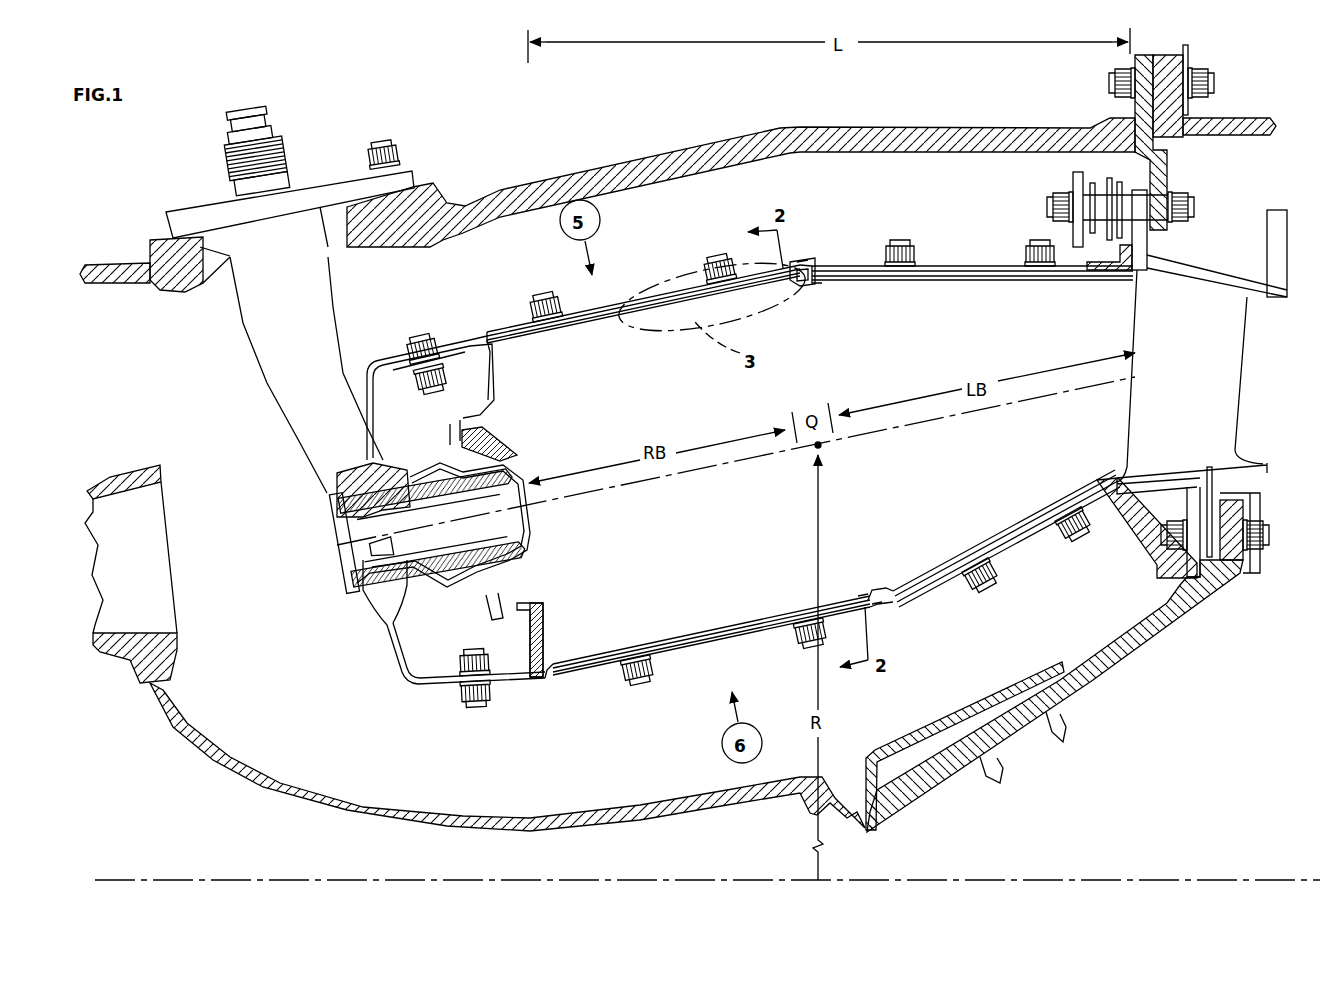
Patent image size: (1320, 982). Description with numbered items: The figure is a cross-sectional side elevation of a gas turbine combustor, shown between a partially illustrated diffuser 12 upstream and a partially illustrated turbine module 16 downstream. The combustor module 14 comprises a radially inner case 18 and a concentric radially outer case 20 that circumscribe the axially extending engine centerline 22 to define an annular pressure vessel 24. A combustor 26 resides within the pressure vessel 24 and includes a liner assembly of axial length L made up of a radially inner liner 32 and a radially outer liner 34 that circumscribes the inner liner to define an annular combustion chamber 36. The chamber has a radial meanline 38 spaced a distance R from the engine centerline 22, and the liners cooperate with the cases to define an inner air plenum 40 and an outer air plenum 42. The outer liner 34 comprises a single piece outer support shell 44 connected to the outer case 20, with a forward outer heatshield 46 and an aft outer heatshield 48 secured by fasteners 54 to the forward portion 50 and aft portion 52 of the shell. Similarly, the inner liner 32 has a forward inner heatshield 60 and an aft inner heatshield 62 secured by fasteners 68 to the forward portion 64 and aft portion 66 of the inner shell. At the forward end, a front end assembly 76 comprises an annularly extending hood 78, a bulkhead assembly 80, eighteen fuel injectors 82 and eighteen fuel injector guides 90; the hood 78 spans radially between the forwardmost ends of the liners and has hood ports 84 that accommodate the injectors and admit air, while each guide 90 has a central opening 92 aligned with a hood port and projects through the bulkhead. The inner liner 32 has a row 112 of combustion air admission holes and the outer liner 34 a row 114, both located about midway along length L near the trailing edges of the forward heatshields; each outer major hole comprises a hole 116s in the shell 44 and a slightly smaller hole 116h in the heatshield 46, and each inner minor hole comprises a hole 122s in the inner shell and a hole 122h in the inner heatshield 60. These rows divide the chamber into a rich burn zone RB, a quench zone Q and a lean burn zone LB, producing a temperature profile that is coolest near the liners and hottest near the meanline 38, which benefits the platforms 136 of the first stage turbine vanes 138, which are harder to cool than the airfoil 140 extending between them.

The diffuser 12 is at (180, 628).
The combustor module 14 is at (185, 769).
The turbine module 16 is at (1272, 158).
The radially inner case 18 is at (716, 807).
The radially outer case 20 is at (967, 136).
The engine centerline 22 is at (1190, 880).
The annular pressure vessel 24 is at (303, 757).
The combustor 26 is at (573, 729).
The radially inner liner 32 is at (771, 648).
The radially outer liner 34 is at (842, 254).
The annular combustion chamber 36 is at (699, 405).
The radial meanline 38 is at (770, 452).
The inner air plenum 40 is at (704, 778).
The outer air plenum 42 is at (645, 230).
The outer support shell 44 is at (960, 267).
The forward outer heatshield 46 is at (620, 328).
The aft outer heatshield 48 is at (958, 283).
The forward portion of the outer shell 50 is at (590, 312).
The aft portion of the outer shell 52 is at (878, 265).
The fasteners 54 is at (534, 307).
The forward inner heatshield 60 is at (683, 638).
The aft inner heatshield 62 is at (1020, 526).
The forward portion of the inner shell 64 is at (665, 655).
The aft portion of the inner shell 66 is at (1005, 546).
The fasteners 68 is at (1075, 546).
The front end assembly 76 is at (564, 521).
The hood 78 is at (396, 648).
The bulkhead assembly 80 is at (552, 600).
The fuel injectors 82 is at (303, 447).
The hood ports 84 is at (390, 603).
The fuel injector guides 90 is at (473, 458).
The central opening 92 is at (520, 464).
The row of combustion air admission holes 112 is at (881, 587).
The row of combustion air admission holes 114 is at (814, 292).
The hole in the outer shell 116s is at (792, 268).
The hole in the forward outer heatshield 116h is at (790, 282).
The hole in the inner heatshield 122h is at (866, 610).
The hole in the inner shell 122s is at (883, 611).
The platforms 136 is at (1190, 278).
The first stage turbine vanes 138 is at (1242, 361).
The airfoil 140 is at (1216, 370).